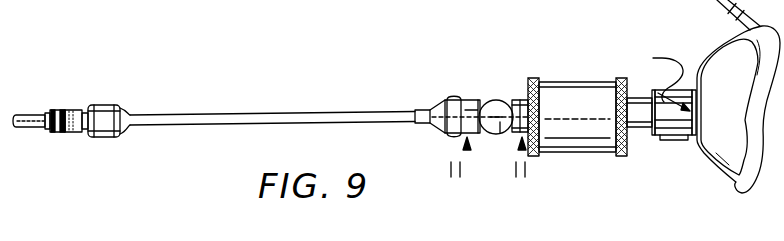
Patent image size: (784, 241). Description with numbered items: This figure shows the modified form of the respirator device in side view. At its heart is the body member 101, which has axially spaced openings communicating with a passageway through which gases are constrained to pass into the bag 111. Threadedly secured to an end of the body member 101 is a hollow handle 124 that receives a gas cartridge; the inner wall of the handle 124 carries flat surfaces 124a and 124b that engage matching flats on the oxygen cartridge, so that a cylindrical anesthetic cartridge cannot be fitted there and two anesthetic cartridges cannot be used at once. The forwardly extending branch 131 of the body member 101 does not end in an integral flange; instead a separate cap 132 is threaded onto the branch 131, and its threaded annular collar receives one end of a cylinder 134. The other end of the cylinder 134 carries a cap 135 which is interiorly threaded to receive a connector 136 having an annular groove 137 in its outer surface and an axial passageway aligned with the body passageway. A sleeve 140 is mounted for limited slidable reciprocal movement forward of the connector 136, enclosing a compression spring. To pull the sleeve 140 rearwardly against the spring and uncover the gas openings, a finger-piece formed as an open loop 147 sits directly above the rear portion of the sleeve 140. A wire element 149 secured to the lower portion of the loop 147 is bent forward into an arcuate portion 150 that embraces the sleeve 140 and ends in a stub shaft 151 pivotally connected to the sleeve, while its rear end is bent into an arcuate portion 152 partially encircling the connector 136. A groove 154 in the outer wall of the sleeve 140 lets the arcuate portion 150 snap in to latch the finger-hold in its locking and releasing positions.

The body member 101 is at (510, 133).
The bag 111 is at (238, 113).
The handle 124 is at (497, 127).
The flat surface 124a is at (480, 99).
The flat surface 124b is at (518, 98).
The forwardly extending branch 131 is at (520, 92).
The cap 132 is at (536, 78).
The cylinder 134 is at (568, 157).
The cap 135 is at (620, 157).
The connector 136 is at (640, 82).
The annular groove 137 is at (647, 90).
The sleeve 140 is at (681, 140).
The open loop 147 is at (662, 57).
The wire element 149 is at (668, 80).
The arcuate portion 150 is at (667, 140).
The stub shaft 151 is at (692, 122).
The arcuate portion 152 is at (657, 137).
The groove 154 is at (704, 84).